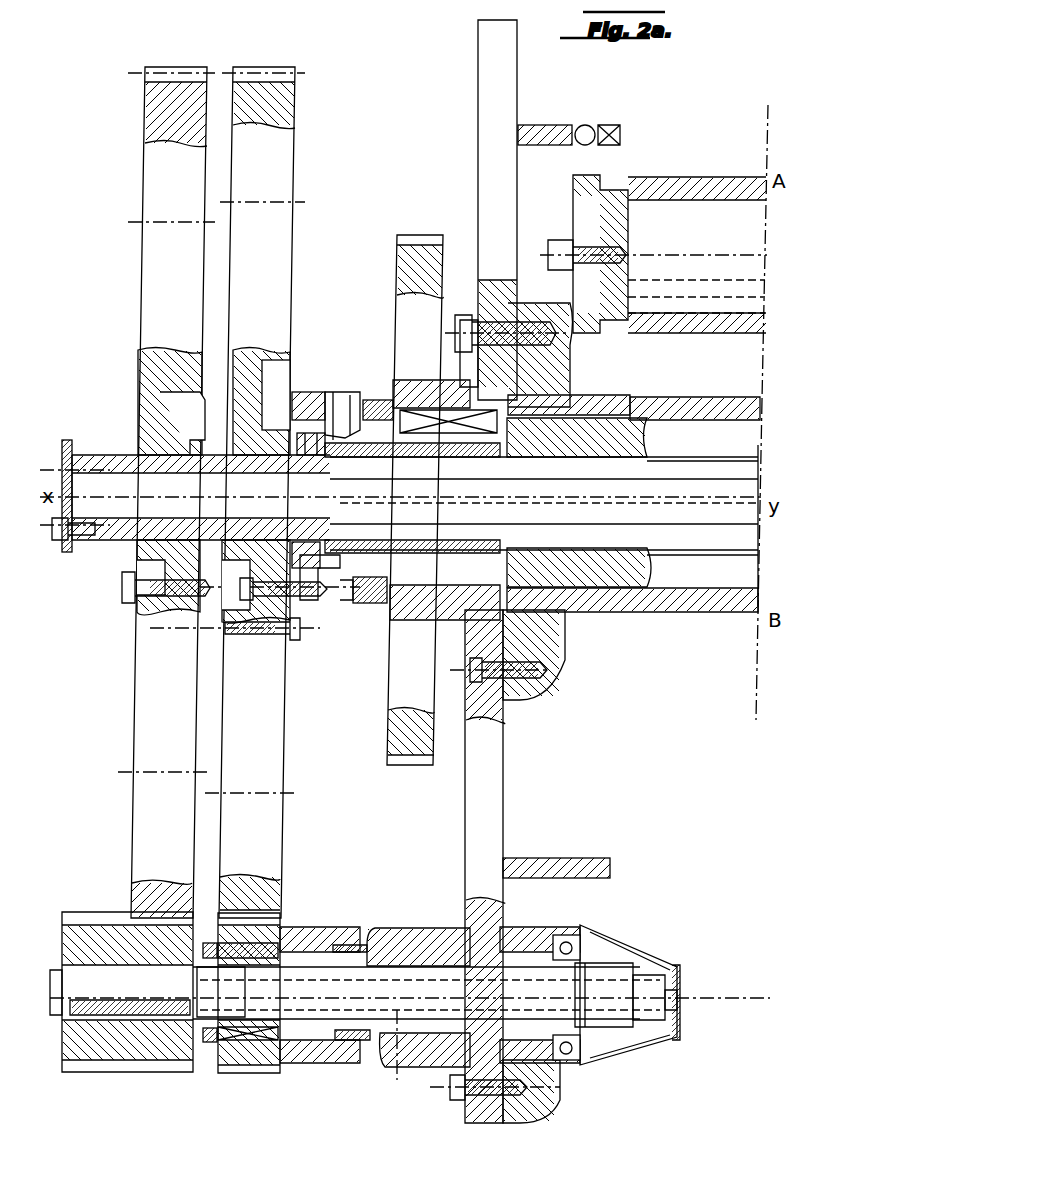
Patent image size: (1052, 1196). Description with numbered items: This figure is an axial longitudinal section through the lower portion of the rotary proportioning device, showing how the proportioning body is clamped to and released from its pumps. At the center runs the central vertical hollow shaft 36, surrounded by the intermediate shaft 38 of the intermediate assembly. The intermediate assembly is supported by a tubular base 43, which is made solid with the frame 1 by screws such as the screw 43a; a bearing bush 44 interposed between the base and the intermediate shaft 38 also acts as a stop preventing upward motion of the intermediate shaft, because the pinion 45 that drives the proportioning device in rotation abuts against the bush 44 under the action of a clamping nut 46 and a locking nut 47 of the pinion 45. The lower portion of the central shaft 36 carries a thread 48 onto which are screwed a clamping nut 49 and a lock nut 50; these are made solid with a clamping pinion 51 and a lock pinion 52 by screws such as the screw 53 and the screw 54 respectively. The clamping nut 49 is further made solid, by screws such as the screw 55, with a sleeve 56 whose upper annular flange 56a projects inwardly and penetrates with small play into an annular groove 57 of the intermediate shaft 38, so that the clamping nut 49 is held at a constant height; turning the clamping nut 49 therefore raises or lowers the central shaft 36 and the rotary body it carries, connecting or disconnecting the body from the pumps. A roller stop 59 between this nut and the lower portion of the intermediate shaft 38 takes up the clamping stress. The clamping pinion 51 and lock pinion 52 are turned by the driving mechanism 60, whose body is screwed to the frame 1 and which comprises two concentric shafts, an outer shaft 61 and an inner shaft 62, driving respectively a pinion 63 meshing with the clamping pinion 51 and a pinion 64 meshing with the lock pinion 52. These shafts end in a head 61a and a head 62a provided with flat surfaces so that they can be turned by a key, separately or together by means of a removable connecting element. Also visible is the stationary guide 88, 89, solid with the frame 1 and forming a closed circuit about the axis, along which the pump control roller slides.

The frame 1 is at (520, 710).
The central vertical hollow shaft 36 is at (118, 545).
The intermediate shaft 38 is at (655, 397).
The tubular base 43 is at (647, 605).
The screw 43a is at (460, 320).
The bearing bush 44 is at (595, 395).
The pinion 45 is at (410, 740).
The clamping nut 46 is at (393, 400).
The locking nut 47 is at (387, 380).
The thread 48 is at (108, 455).
The clamping nut 49 is at (275, 340).
The lock nut 50 is at (170, 350).
The clamping pinion 51 is at (285, 108).
The lock pinion 52 is at (152, 118).
The screw 53 is at (258, 640).
The screw 54 is at (130, 605).
The screw 55 is at (300, 625).
The sleeve 56 is at (335, 598).
The annular flange 56a is at (330, 433).
The annular groove 57 is at (318, 392).
The roller stop 59 is at (375, 603).
The driving mechanism 60 is at (333, 1086).
The outer shaft 61 is at (610, 963).
The head 61a is at (630, 975).
The shaft 62 is at (150, 1015).
The head 62a is at (670, 992).
The pinion 63 is at (300, 925).
The pinion 64 is at (105, 925).
The stationary guide 88 is at (590, 126).
The stationary guide 89 is at (545, 125).